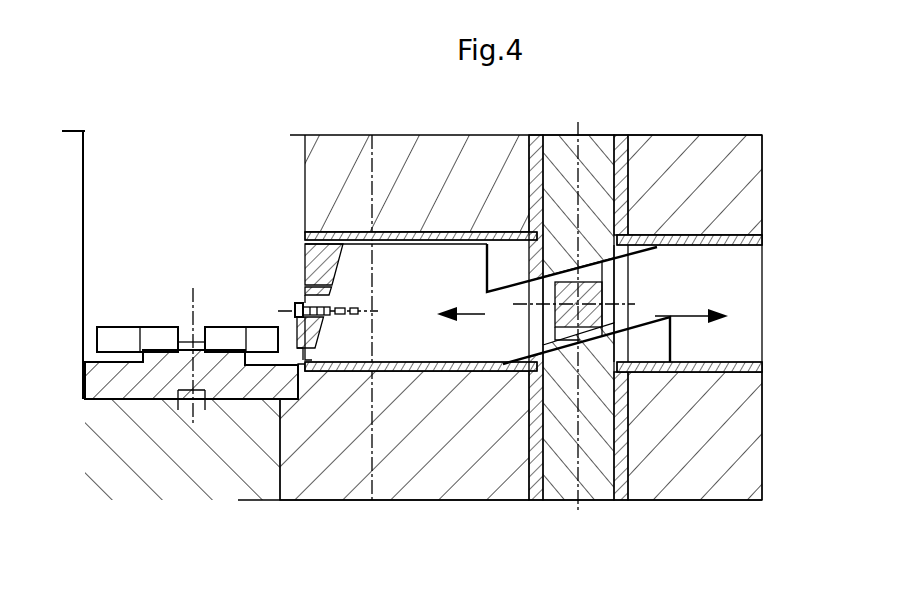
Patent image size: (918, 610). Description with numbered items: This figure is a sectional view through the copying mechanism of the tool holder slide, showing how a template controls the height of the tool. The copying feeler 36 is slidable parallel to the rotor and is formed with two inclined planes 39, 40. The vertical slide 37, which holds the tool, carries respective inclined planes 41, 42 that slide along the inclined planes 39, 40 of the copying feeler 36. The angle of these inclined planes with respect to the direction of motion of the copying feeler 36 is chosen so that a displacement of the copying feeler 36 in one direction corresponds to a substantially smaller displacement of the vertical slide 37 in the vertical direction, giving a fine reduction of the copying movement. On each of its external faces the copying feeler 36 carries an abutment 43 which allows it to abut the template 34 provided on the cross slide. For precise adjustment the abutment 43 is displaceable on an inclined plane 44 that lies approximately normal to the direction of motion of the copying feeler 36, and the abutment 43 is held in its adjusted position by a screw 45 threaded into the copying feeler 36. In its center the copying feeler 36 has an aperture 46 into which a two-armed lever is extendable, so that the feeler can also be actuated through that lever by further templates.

The template 34 is at (265, 333).
The copying feeler 36 is at (446, 262).
The vertical slide 37 is at (587, 463).
The inclined plane 39 is at (522, 280).
The inclined plane 40 is at (538, 372).
The inclined plane 41 is at (597, 262).
The inclined plane 42 is at (628, 395).
The abutment 43 is at (293, 316).
The inclined plane 44 is at (340, 272).
The screw 45 is at (293, 305).
The aperture 46 is at (588, 292).